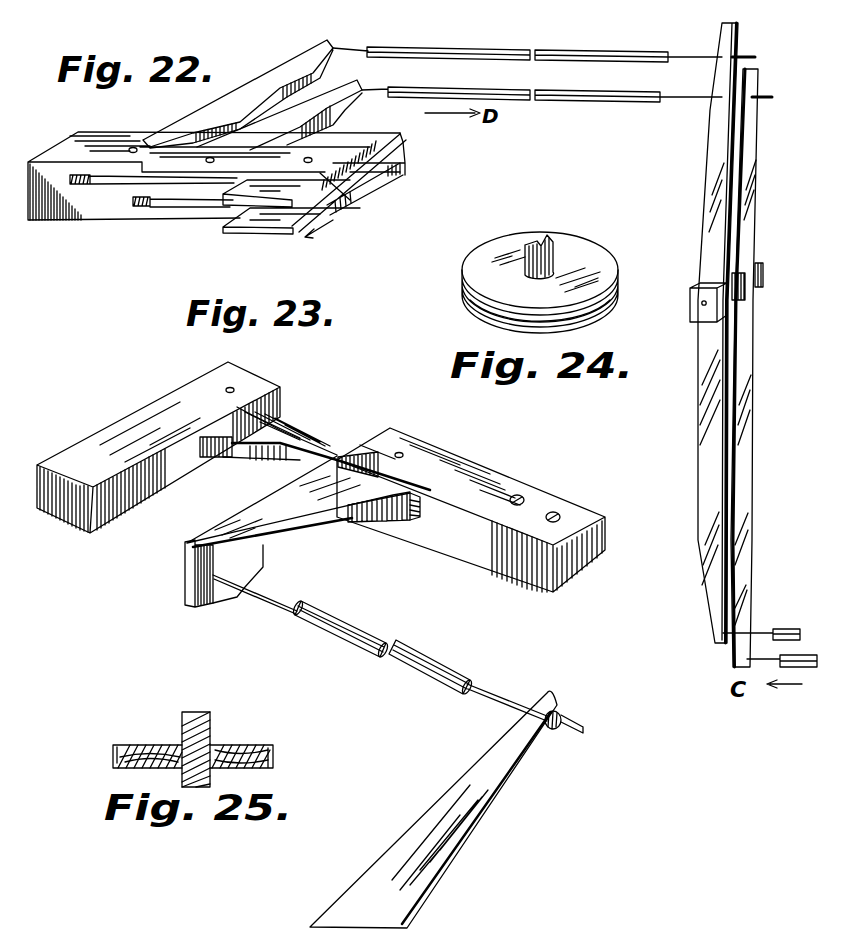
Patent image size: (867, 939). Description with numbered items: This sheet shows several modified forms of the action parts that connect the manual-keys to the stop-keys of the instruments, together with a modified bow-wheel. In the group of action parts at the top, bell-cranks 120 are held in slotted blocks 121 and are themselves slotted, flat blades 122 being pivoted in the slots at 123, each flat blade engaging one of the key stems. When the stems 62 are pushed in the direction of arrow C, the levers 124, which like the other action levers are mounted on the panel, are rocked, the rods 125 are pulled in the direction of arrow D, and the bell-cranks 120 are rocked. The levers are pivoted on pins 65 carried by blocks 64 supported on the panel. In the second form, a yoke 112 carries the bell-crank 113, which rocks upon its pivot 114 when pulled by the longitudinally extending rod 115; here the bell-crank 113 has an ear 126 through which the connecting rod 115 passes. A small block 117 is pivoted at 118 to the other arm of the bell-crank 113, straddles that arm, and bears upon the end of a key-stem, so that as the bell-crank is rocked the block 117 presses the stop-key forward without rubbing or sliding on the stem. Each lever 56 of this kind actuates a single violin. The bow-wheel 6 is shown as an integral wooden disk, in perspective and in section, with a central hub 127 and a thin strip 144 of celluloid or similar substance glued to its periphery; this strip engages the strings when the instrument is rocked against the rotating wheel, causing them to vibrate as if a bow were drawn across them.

In FIG. 22, the bell-crank 120 is at (287, 70).
In FIG. 22, the slotted block 121 is at (105, 212).
In FIG. 22, the flat blade 122 is at (405, 140).
In FIG. 22, the pivot 123 is at (310, 162).
In FIG. 22, the rod 125 is at (597, 90).
In FIG. 22, the lever 124 is at (713, 523).
In FIG. 22, the block 64 is at (692, 285).
In FIG. 22, the pin 65 is at (701, 303).
In FIG. 22, the link 62 is at (808, 655).
In FIG. 23, the block 117 is at (158, 447).
In FIG. 23, the pivot 118 is at (234, 389).
In FIG. 23, the pivot 114 is at (403, 456).
In FIG. 23, the yoke 112 is at (460, 542).
In FIG. 23, the bell-crank 113 is at (323, 505).
In FIG. 23, the ear 126 is at (197, 608).
In FIG. 23, the rod 115 is at (436, 666).
In FIG. 23, the lever 56 is at (466, 785).
In FIG. 24, the hub 127 is at (550, 242).
In FIG. 25, the hub 127 is at (182, 727).
In FIG. 24, the bow-wheel 6 is at (573, 250).
In FIG. 25, the bow-wheel 6 is at (243, 747).
In FIG. 24, the strip of celluloid 144 is at (603, 313).
In FIG. 25, the strip of celluloid 144 is at (275, 758).